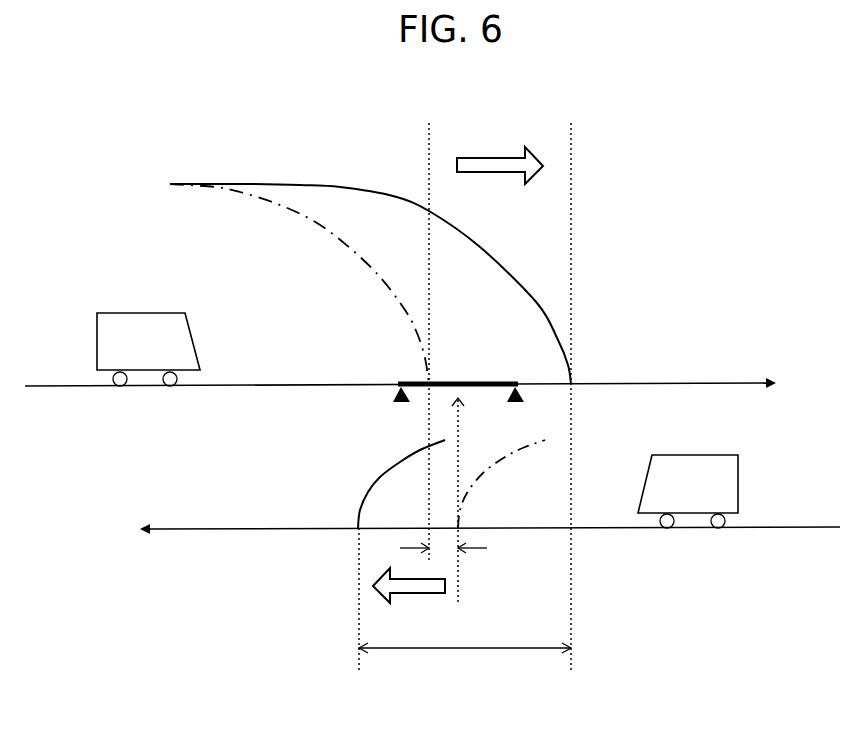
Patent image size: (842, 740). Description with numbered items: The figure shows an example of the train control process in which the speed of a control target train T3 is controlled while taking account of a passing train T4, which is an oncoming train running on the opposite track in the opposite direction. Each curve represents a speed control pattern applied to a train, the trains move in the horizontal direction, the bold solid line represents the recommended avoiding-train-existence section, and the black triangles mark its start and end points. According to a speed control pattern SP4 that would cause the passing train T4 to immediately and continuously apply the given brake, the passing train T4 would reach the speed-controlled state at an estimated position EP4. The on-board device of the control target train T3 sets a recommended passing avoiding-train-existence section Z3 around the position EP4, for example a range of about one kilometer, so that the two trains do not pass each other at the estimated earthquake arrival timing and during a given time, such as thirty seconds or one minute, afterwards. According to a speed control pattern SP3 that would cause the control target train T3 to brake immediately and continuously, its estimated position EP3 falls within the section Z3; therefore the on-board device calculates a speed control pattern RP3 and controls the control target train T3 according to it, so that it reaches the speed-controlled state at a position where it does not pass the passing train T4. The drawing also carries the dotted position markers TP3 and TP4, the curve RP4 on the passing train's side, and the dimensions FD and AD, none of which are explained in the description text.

The control target train T3 is at (113, 322).
The passing train T4 is at (733, 473).
The recommended passing avoiding-train-existence section Z3 is at (458, 377).
The estimated position at which the control target train is set to the speed-control EP3 is at (429, 332).
The target point of first train TP3 is at (567, 387).
The estimated position at which the passing train is set to the speed-controlled sta EP4 is at (454, 511).
The target point of second train TP4 is at (355, 612).
The speed control pattern RP3 is at (370, 284).
The speed control pattern SP3 is at (299, 284).
The running profile of second train RP4 is at (393, 484).
The speed control pattern SP4 is at (501, 484).
The forward distance FD is at (458, 551).
The approach distance AD is at (465, 659).